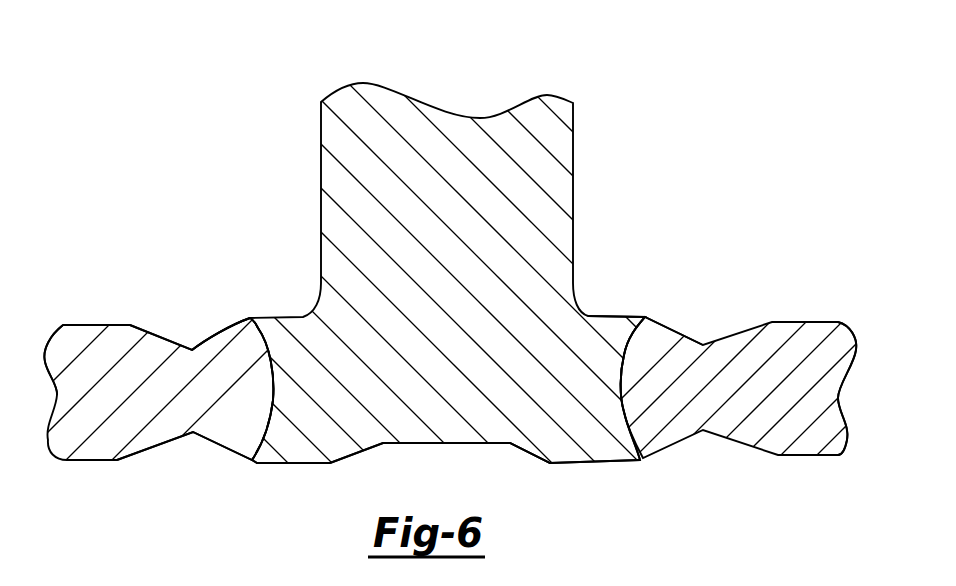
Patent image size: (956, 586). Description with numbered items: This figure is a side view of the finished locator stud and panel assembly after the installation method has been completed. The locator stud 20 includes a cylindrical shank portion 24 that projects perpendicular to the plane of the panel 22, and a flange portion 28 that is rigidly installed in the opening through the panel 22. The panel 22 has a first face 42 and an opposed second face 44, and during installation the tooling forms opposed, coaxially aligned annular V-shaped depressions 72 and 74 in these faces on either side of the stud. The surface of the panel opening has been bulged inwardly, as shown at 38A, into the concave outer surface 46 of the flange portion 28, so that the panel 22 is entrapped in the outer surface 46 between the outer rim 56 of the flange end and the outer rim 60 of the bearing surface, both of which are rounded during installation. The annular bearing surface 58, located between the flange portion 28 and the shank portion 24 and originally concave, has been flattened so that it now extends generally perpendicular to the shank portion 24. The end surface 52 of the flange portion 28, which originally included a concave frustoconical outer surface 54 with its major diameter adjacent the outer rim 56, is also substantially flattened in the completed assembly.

The locator stud 20 is at (658, 215).
The panel 22 is at (86, 468).
The shank portion 24 is at (330, 175).
The flange portion 28 is at (623, 402).
The bulged surface of panel opening 38A is at (275, 395).
The first face of panel 42 is at (93, 325).
The second face of panel 44 is at (795, 455).
The outer surface of flange portion 46 is at (640, 384).
The end surface of flange portion 52 is at (404, 453).
The frustoconical outer surface 54 is at (533, 458).
The outer rim 56 is at (252, 463).
The annular bearing surface 58 is at (615, 315).
The outer rim of bearing surface 60 is at (251, 318).
The annular V-shaped depression 72 is at (192, 348).
The annular V-shaped depression 74 is at (193, 433).